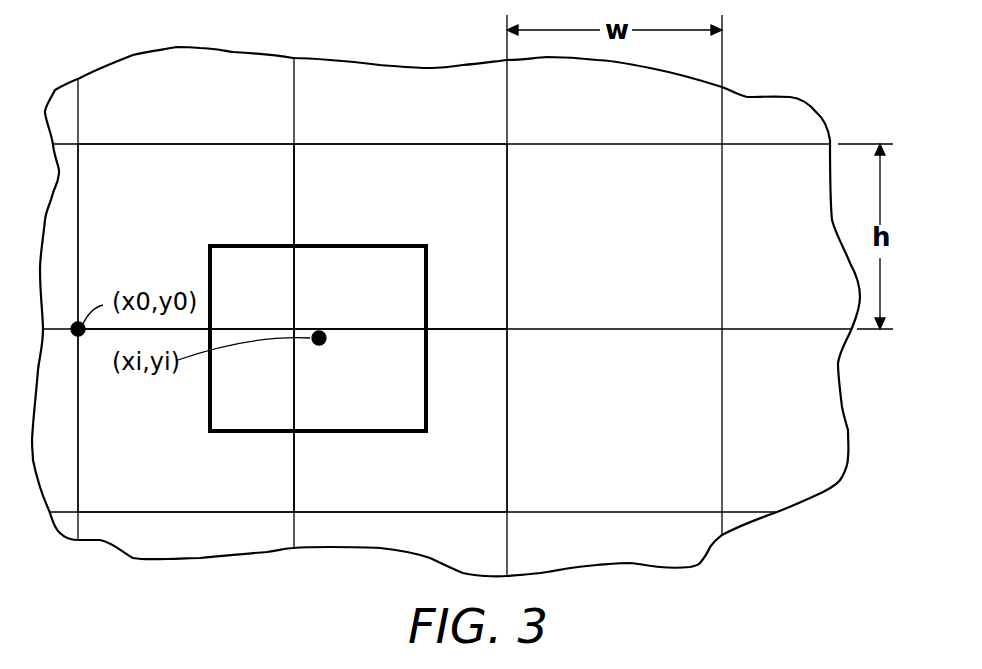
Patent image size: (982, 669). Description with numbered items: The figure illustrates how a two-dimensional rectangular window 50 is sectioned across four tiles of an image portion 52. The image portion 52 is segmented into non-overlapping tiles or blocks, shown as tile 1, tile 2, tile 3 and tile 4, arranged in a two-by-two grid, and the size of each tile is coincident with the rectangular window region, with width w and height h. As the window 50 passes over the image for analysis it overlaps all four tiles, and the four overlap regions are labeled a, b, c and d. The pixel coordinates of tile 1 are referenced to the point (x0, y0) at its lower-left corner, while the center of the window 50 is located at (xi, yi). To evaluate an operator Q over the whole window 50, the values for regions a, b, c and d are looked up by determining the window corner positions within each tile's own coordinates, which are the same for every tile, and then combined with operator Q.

The rectangular window 50 is at (427, 277).
The image portion 52 is at (410, 65).
The tile 1 is at (186, 236).
The tile 2 is at (400, 236).
The tile 3 is at (186, 420).
The tile 4 is at (400, 420).